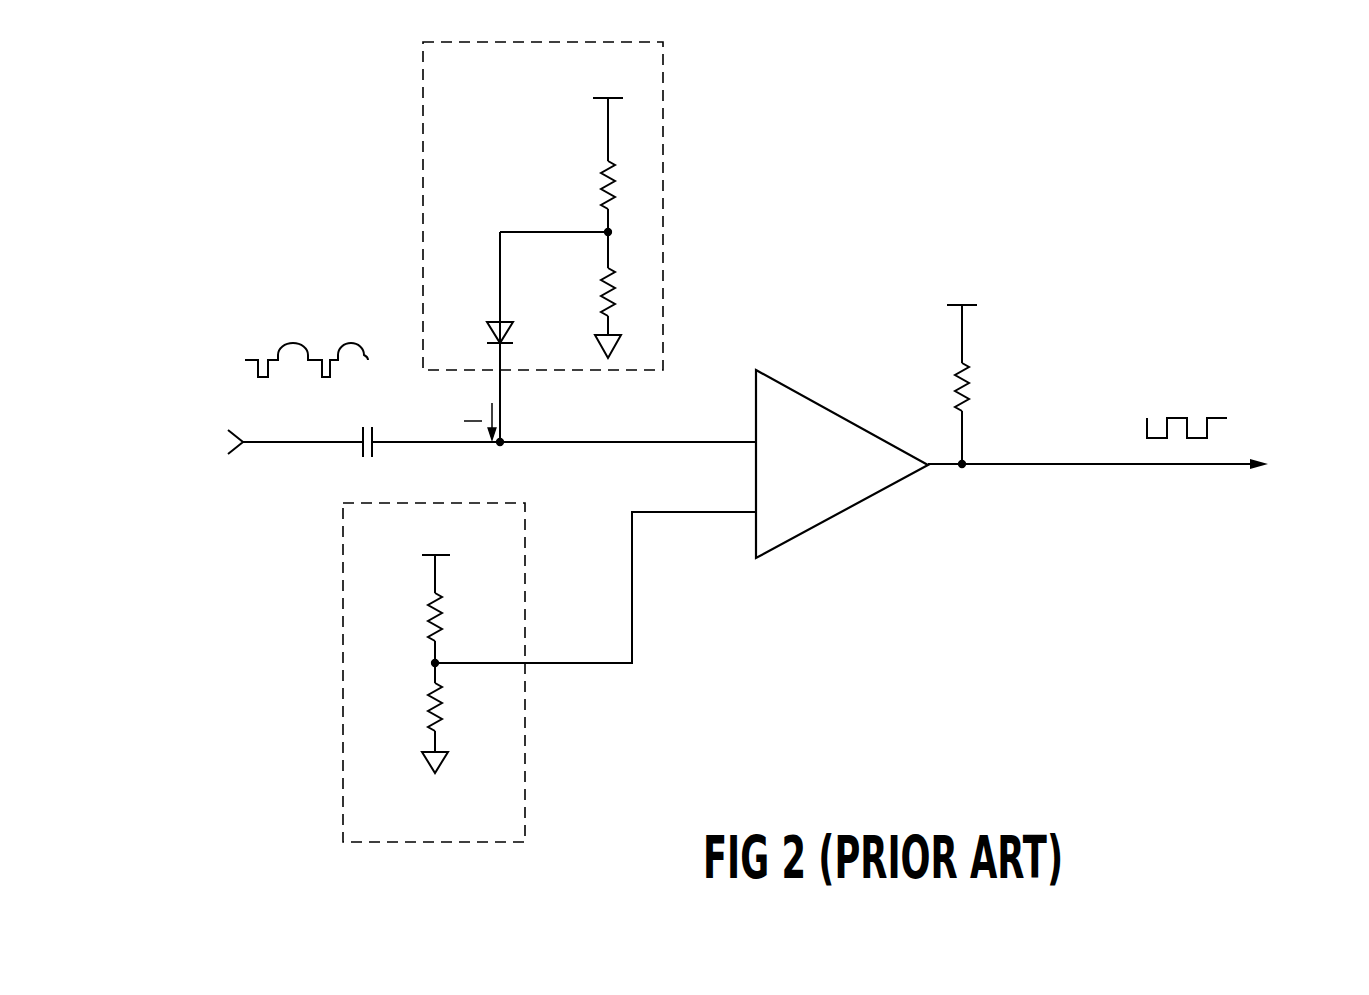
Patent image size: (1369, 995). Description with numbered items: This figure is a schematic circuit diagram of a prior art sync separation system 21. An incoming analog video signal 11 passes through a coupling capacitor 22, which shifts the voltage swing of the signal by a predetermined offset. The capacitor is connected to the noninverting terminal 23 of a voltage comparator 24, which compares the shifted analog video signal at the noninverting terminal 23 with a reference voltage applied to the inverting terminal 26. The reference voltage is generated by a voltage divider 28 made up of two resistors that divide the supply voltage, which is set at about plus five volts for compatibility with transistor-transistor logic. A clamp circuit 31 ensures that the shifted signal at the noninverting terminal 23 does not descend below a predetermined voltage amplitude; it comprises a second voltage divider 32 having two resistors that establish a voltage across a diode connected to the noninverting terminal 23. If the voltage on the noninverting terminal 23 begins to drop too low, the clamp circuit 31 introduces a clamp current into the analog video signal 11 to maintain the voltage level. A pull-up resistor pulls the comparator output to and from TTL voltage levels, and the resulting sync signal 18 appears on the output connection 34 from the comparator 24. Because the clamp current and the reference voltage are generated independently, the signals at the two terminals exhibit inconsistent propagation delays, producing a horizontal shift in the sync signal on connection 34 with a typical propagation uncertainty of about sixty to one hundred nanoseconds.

The analog video signal 11 is at (240, 429).
The sync signal (TTL) 18 is at (1257, 492).
The sync separation system 21 is at (1053, 222).
The coupling capacitor C1 22 is at (327, 443).
The noninverting terminal 23 is at (617, 443).
The voltage comparator 24 is at (755, 547).
The inverting terminal 26 is at (632, 608).
The voltage divider 28 is at (343, 533).
The clamp circuit 31 is at (600, 240).
The voltage divider 32 is at (518, 205).
The connection 34 is at (1050, 466).